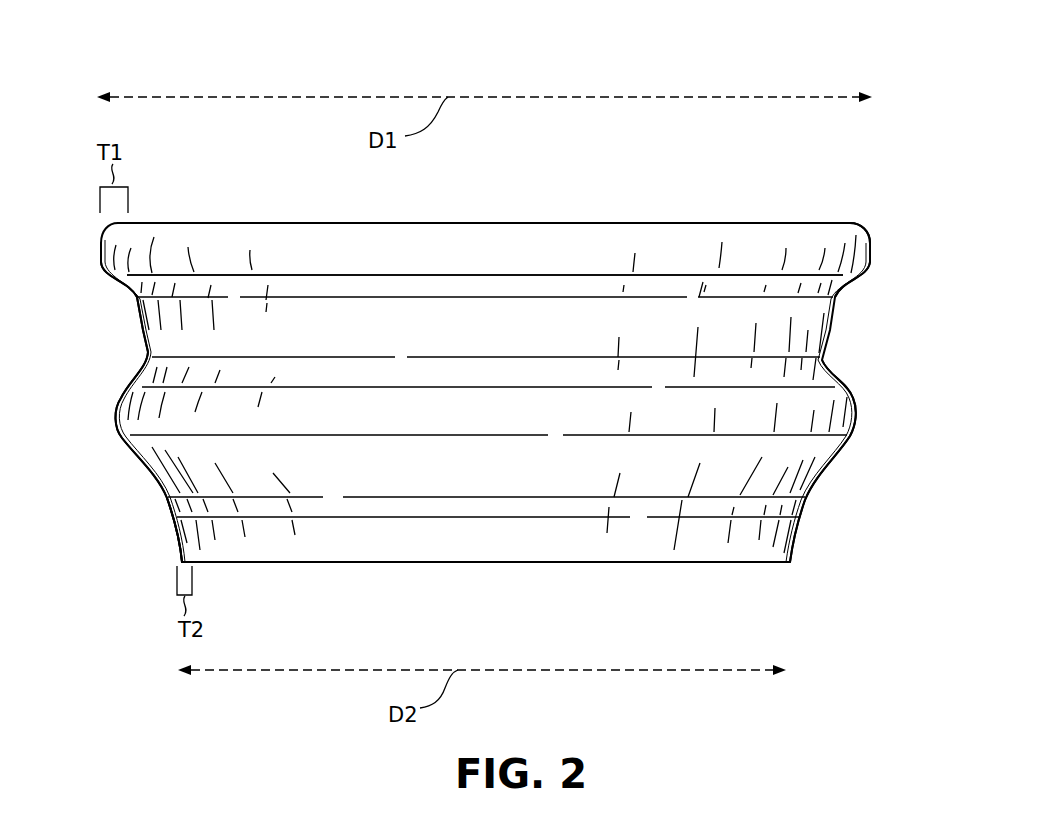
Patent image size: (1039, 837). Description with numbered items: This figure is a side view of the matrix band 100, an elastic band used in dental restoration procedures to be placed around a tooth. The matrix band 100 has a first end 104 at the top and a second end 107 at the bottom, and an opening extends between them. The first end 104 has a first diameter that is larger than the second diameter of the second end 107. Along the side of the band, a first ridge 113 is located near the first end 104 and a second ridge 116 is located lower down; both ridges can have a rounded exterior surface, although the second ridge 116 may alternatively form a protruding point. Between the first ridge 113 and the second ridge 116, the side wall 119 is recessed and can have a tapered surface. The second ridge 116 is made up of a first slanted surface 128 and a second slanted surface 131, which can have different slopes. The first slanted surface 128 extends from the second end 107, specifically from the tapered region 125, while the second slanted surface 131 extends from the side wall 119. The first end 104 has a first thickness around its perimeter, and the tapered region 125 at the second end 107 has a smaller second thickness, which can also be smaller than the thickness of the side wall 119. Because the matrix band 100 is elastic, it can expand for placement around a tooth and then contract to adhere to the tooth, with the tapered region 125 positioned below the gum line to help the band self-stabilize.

The matrix band 100 is at (580, 60).
The first end 104 is at (668, 176).
The second end 107 is at (540, 578).
The first ridge 113 is at (864, 246).
The second ridge 116 is at (852, 400).
The side wall 119 is at (143, 331).
The tapered region 125 is at (160, 541).
The first slanted surface 128 is at (148, 477).
The second slanted surface 131 is at (141, 386).